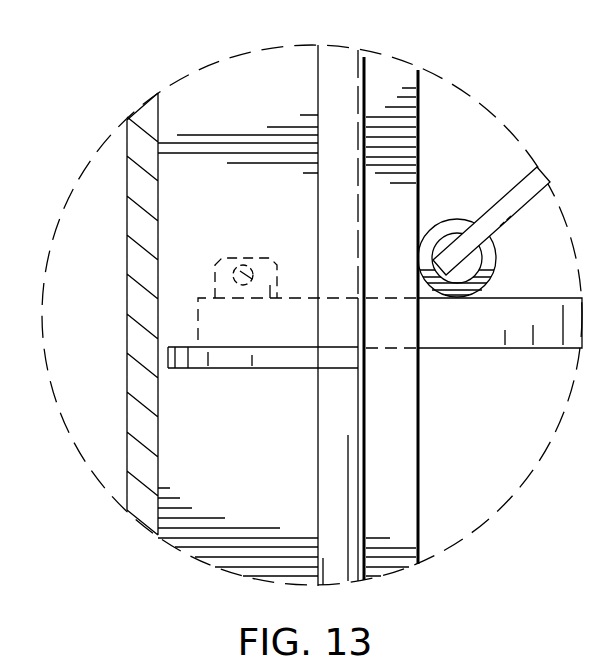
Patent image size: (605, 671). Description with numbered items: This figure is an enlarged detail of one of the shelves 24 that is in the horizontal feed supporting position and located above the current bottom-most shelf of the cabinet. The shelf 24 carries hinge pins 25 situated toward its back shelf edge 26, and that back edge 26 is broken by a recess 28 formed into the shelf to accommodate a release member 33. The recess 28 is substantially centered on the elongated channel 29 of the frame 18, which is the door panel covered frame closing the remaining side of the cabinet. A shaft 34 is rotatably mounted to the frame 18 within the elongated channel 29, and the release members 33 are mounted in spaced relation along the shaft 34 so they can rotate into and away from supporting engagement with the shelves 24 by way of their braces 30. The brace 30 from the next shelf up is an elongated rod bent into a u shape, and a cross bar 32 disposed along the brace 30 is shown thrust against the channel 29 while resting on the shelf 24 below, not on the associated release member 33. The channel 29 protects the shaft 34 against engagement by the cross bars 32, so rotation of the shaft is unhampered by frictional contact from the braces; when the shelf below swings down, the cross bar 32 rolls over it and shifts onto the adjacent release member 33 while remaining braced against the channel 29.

The frame 18 is at (113, 277).
The shelf 24 is at (517, 348).
The hinge pin 25 is at (274, 273).
The back shelf edge 26 is at (197, 307).
The recess 28 is at (465, 328).
The elongated channel 29 is at (222, 103).
The brace 30 is at (511, 193).
The cross bar 32 is at (493, 270).
The release member 33 is at (232, 362).
The shaft 34 is at (340, 203).